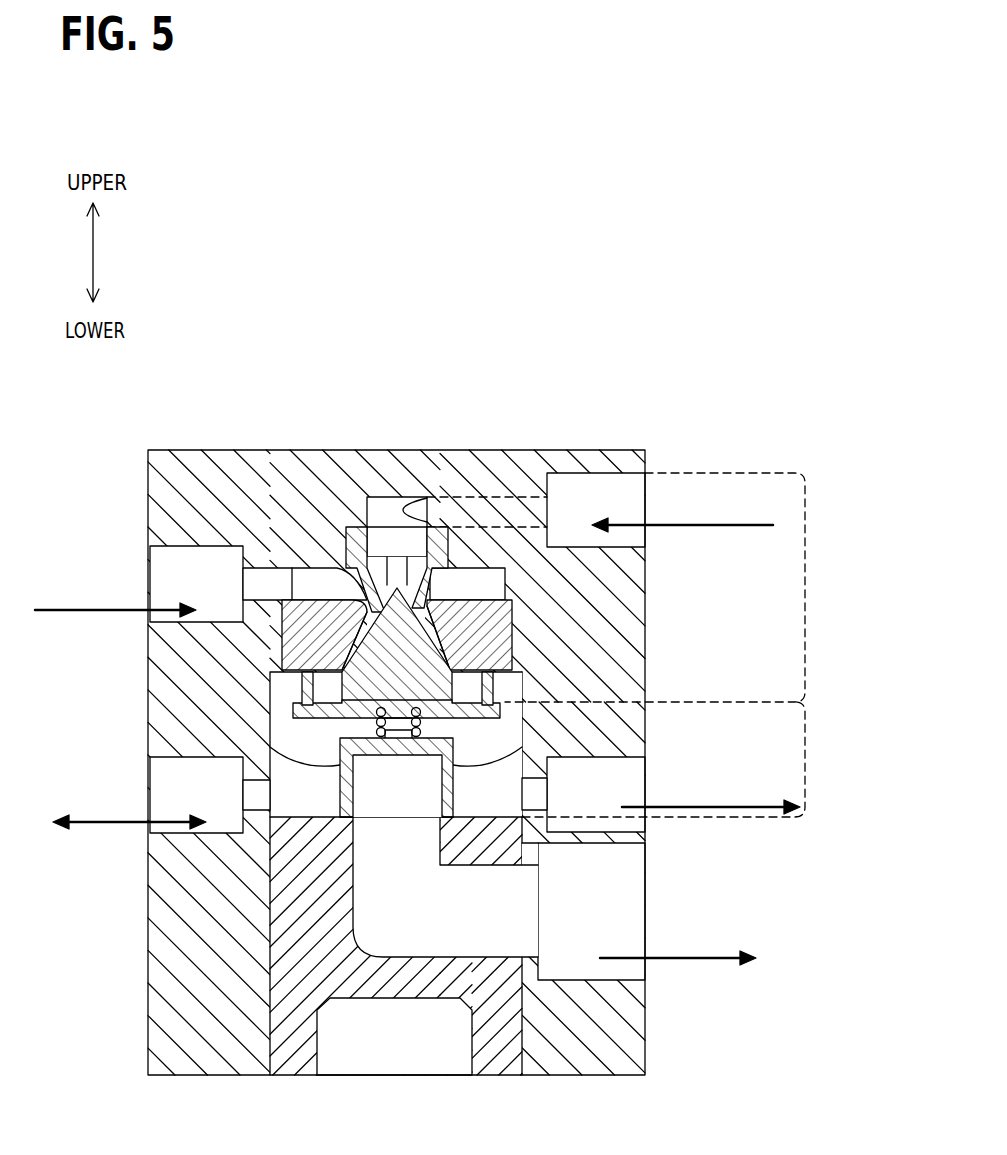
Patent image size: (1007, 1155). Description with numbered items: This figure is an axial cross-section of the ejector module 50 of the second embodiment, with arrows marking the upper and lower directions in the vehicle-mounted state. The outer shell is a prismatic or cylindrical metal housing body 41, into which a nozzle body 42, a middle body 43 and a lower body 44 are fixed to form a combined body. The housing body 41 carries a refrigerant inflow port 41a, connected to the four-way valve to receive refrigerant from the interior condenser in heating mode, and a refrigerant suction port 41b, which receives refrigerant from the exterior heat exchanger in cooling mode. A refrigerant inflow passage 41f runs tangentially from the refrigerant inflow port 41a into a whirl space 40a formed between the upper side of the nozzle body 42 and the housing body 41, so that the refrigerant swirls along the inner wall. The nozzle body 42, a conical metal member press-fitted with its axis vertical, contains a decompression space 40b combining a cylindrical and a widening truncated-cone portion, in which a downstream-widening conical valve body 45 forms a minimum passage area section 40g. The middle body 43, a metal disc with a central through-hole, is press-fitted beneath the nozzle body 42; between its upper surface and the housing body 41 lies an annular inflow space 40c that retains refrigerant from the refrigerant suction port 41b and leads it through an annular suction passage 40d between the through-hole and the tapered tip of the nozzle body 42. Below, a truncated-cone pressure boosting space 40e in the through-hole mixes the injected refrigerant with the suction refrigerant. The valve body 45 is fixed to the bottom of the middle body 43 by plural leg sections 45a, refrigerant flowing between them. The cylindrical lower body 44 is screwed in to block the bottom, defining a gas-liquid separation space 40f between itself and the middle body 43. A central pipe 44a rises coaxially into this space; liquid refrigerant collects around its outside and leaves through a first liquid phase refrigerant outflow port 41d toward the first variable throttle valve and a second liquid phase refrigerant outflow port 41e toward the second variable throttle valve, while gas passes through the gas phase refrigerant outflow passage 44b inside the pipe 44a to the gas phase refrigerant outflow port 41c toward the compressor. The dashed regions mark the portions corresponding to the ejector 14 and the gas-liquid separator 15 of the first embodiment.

The ejector module 50 is at (596, 375).
The housing body 41 is at (225, 462).
The nozzle body 42 is at (360, 530).
The middle body 43 is at (470, 640).
The lower body 44 is at (313, 1080).
The whirl space 40a is at (393, 503).
The decompression space 40b is at (445, 618).
The inflow space 40c is at (460, 585).
The suction passage 40d is at (345, 568).
The pressure boosting space 40e is at (445, 660).
The gas-liquid separation space 40f is at (283, 730).
The minimum passage area section 40g is at (415, 565).
The refrigerant inflow port 41a is at (647, 472).
The refrigerant suction port 41b is at (150, 546).
The gas phase refrigerant outflow port 41c is at (647, 982).
The first liquid phase refrigerant outflow port 41d is at (148, 833).
The second liquid phase refrigerant outflow port 41e is at (647, 847).
The refrigerant inflow passage 41f is at (484, 497).
The pipe 44a is at (343, 805).
The gas phase refrigerant outflow passage 44b is at (410, 935).
The valve body 45 is at (490, 730).
The leg sections 45a is at (487, 683).
The ejector 14 is at (805, 584).
The gas-liquid separator 15 is at (805, 741).